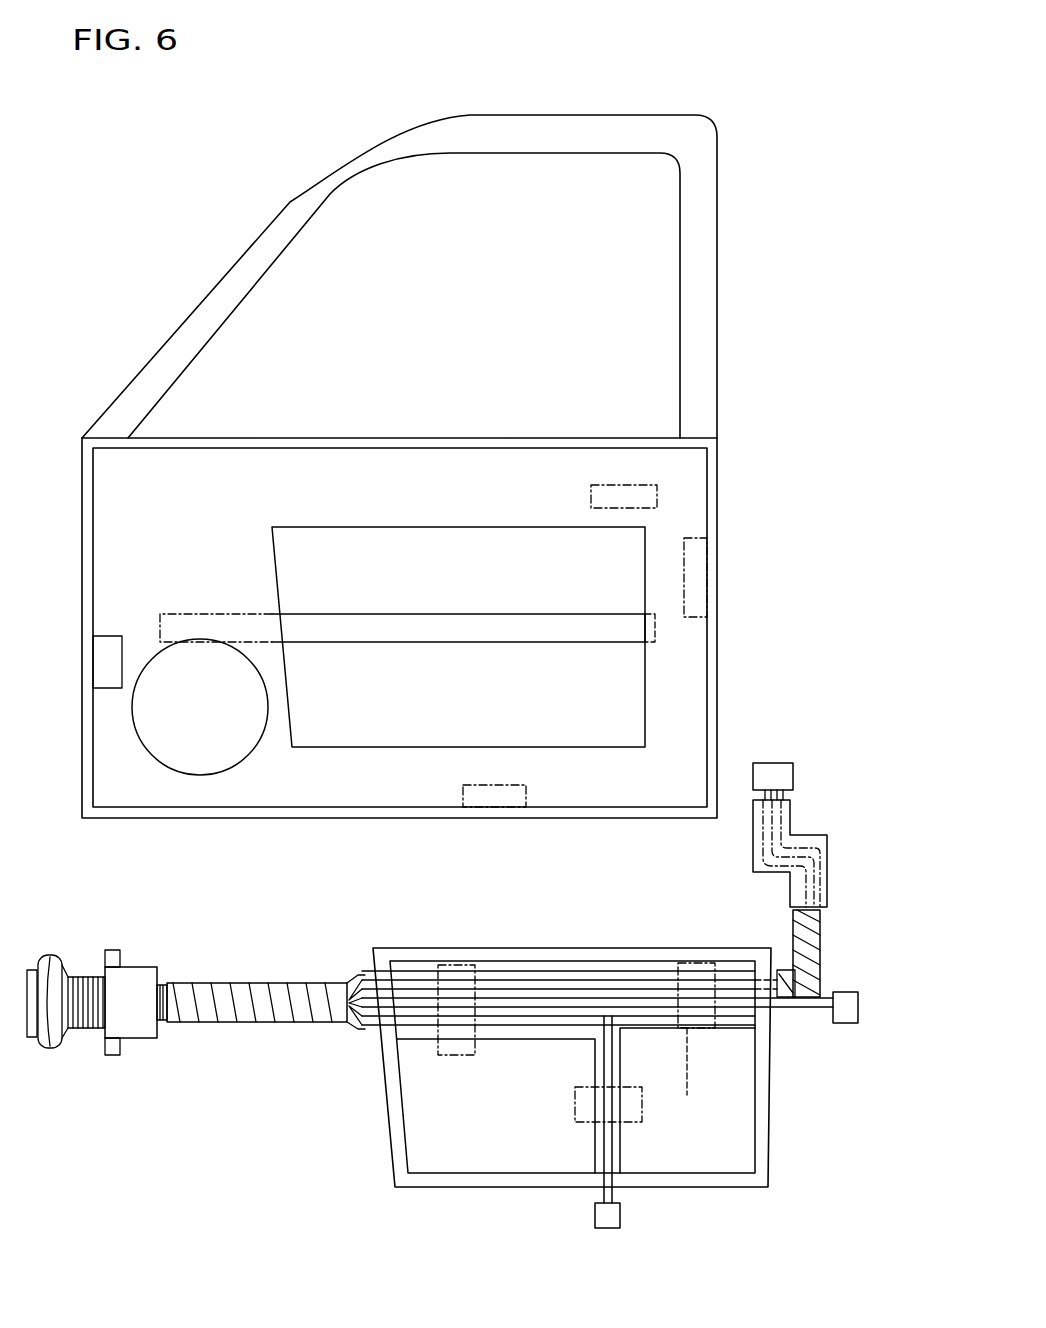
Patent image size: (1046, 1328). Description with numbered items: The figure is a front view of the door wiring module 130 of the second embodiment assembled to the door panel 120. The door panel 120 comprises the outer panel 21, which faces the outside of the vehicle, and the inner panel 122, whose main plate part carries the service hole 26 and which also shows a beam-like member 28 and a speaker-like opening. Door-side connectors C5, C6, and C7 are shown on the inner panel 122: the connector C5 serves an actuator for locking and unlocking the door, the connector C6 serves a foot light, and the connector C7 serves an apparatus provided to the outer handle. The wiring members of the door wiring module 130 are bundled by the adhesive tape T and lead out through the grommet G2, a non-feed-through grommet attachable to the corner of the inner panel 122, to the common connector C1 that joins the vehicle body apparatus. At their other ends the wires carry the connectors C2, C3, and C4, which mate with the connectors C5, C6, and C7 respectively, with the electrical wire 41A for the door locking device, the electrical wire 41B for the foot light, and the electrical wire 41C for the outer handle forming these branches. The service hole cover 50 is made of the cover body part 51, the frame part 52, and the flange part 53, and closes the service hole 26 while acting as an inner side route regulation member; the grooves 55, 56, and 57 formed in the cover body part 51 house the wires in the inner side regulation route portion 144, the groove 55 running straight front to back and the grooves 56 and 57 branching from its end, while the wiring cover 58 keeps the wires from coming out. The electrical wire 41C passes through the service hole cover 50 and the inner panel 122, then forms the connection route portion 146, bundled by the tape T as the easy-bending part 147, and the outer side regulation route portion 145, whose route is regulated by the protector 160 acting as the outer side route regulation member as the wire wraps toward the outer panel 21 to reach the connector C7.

The door panel 120 is at (190, 281).
The inner panel 122 is at (688, 661).
The outer panel 21 is at (718, 633).
The service hole 26 is at (646, 700).
The reinforcement beam 28 is at (475, 645).
The connector C7 is at (625, 485).
The connector C5 is at (694, 538).
The connector C6 is at (527, 796).
The connector C4 is at (772, 762).
The outer side regulation route portion 145 is at (842, 867).
The protector 160 is at (806, 835).
The connection route portion 146 is at (836, 950).
The easy-bending part 147 is at (826, 976).
The adhesive tape T is at (822, 915).
The common connector C1 is at (30, 1040).
The grommet G2 is at (130, 1040).
The door wiring module 130 is at (256, 938).
The inner side regulation route portion 144 is at (575, 956).
The electrical wire for the outer handle 41C is at (741, 962).
The electrical wire for a door locking device 41A is at (791, 1022).
The connector C2 is at (845, 1024).
The service hole cover 50 is at (618, 1067).
The cover body part 51 is at (740, 1100).
The frame part 52 is at (750, 1126).
The flange part 53 is at (766, 1155).
The wiring cover 58 is at (445, 1057).
The groove 55 is at (505, 1040).
The groove 57 is at (604, 1062).
The groove 56 is at (745, 1010).
The electrical wire 41B is at (612, 1152).
The connector C3 is at (621, 1215).